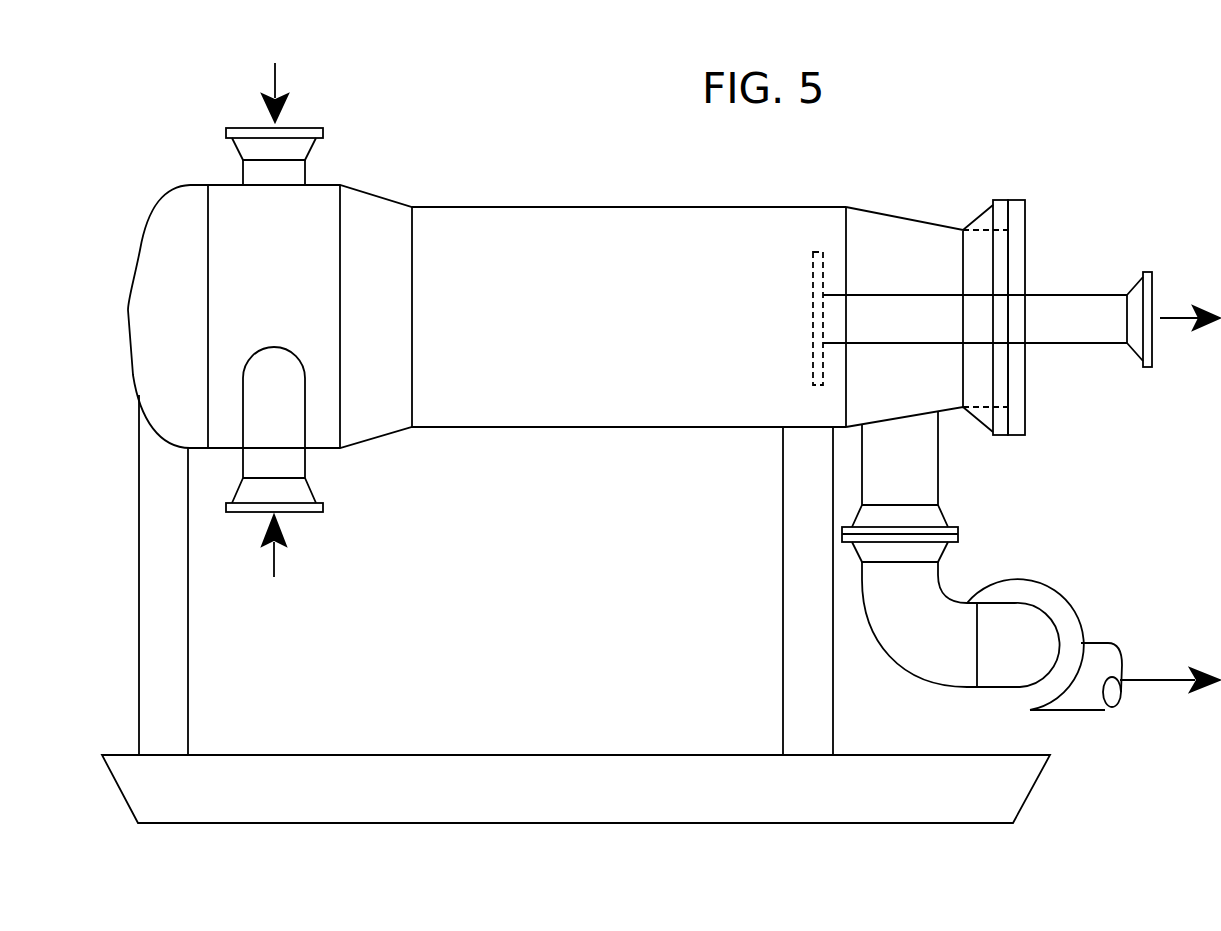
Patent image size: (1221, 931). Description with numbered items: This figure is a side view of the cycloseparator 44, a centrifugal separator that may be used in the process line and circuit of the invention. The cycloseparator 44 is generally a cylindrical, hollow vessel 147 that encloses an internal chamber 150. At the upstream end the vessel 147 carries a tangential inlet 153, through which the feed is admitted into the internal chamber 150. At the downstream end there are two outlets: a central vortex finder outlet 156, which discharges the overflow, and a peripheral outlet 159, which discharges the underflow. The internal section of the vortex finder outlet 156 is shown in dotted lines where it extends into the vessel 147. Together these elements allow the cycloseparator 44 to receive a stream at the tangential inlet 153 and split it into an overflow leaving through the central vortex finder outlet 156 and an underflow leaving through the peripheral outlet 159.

The cycloseparator 44 is at (564, 198).
The vessel 147 is at (516, 430).
The internal chamber 150 is at (609, 404).
The tangential inlet 153 is at (307, 460).
The central vortex finder outlet 156 is at (1077, 343).
The peripheral outlet 159 is at (938, 458).